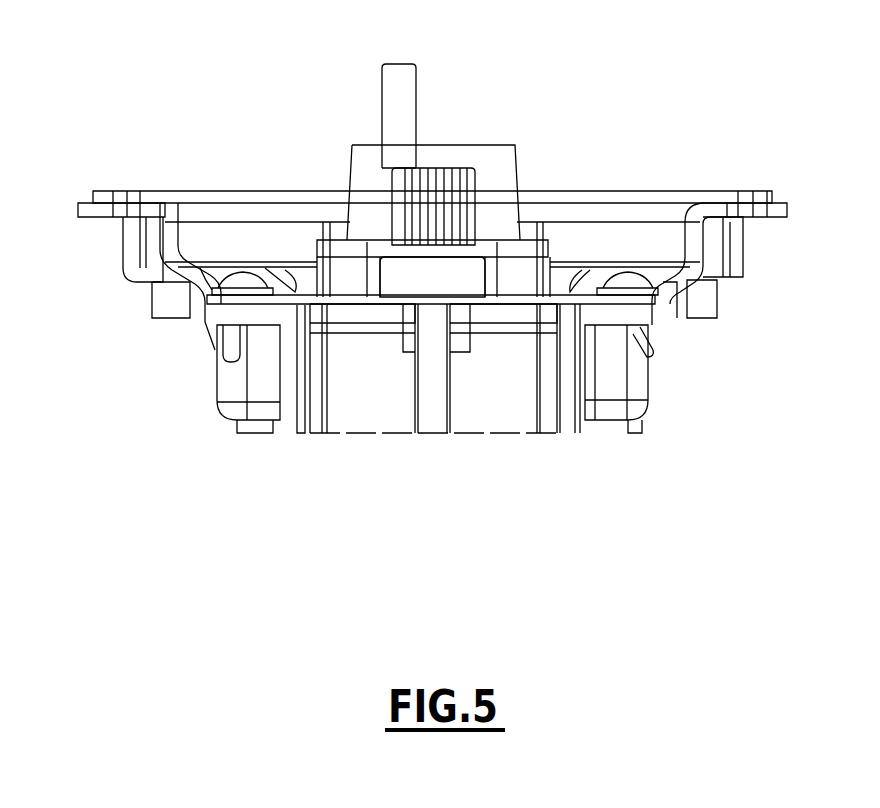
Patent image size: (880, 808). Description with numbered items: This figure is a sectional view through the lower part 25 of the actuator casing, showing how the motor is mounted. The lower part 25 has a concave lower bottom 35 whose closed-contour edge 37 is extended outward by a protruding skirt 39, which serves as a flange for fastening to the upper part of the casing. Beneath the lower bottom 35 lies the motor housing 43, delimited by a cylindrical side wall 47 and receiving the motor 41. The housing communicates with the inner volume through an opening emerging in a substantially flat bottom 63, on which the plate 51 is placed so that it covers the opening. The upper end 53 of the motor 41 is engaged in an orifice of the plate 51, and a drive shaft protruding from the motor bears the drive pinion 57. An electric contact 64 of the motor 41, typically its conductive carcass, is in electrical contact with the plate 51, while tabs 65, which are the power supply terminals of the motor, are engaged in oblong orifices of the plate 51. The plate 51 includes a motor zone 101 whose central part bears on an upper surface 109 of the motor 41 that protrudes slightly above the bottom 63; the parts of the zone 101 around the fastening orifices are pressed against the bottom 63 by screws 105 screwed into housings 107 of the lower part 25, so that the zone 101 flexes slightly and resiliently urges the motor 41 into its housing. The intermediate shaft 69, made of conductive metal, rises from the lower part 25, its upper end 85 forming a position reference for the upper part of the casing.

The lower part 25 is at (132, 293).
The concave lower bottom 35 is at (693, 248).
The closed-contour edge 37 is at (705, 222).
The protruding skirt 39 is at (118, 208).
The motor 41 is at (523, 413).
The motor housing 43 is at (300, 404).
The side wall 47 is at (577, 407).
The plate 51 is at (481, 308).
The upper end 53 is at (470, 275).
The drive pinion 57 is at (453, 205).
The bottom 63 is at (601, 320).
The electric contact 64 is at (370, 310).
The tabs 65 is at (326, 230).
The intermediate shaft 69 is at (400, 128).
The upper end 85 is at (399, 78).
The motor zone 101 is at (425, 300).
The screws 105 is at (240, 276).
The housings 107 is at (228, 382).
The upper surface 109 is at (381, 300).